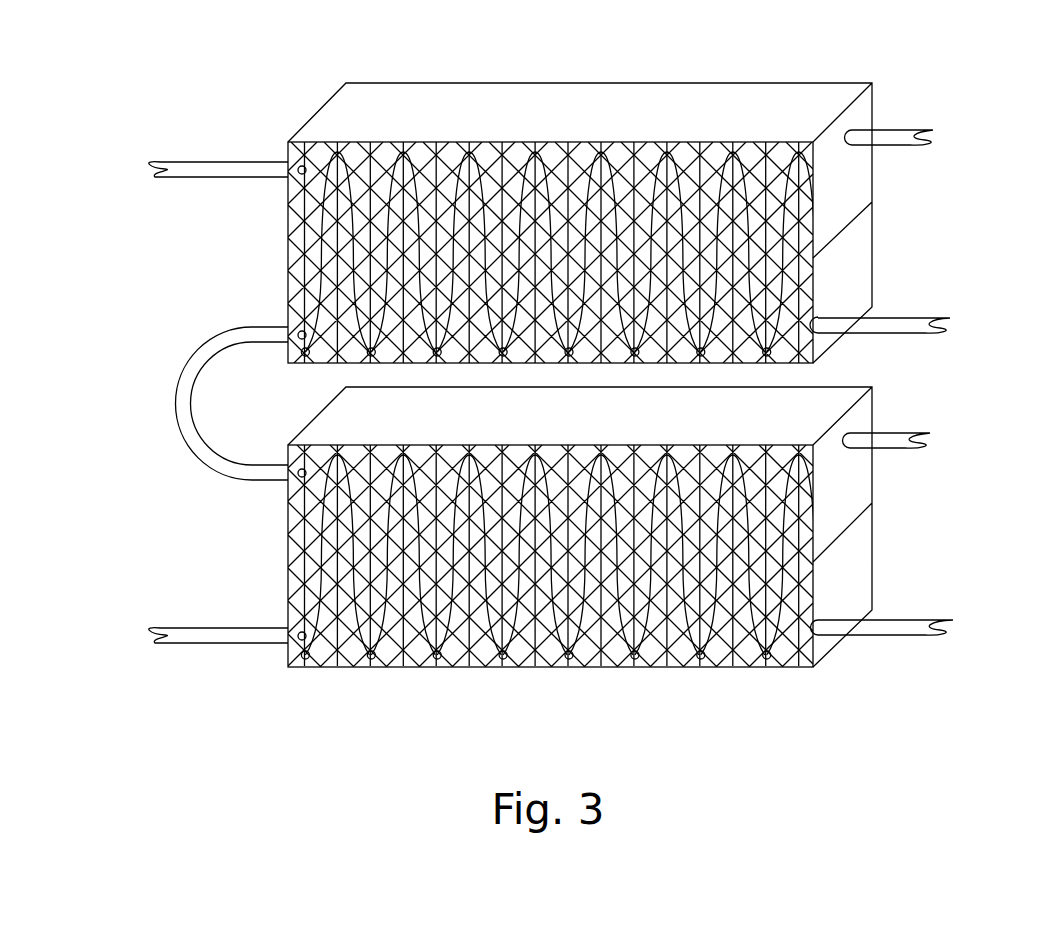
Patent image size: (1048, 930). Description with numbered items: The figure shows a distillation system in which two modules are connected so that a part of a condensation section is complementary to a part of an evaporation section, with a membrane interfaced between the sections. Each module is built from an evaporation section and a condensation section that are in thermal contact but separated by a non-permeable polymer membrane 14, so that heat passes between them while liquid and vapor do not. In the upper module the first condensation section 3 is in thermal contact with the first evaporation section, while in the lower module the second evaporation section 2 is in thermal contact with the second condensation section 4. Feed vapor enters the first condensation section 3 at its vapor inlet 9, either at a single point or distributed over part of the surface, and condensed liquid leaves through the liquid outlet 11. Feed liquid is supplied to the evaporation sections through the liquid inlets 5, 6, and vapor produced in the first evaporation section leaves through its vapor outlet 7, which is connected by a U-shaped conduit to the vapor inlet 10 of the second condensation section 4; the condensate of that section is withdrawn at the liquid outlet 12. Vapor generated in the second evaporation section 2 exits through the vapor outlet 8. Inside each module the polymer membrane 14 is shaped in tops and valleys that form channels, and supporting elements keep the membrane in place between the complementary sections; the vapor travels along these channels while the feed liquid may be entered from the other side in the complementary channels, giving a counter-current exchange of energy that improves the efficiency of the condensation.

The second evaporation section 2 is at (508, 155).
The first condensation section 3 is at (342, 640).
The second condensation section 4 is at (737, 347).
The liquid inlet of first evaporation section 5 is at (867, 440).
The liquid inlet of second evaporation section 6 is at (872, 135).
The vapor outlet of first evaporation section 7 is at (277, 473).
The vapor outlet of second evaporation section 8 is at (215, 168).
The vapor inlet of first condensation section 9 is at (270, 634).
The vapor inlet of second condensation section 10 is at (273, 330).
The liquid outlet of first condensation section 11 is at (848, 625).
The liquid outlet of second condensation section 12 is at (853, 325).
The non-permeable polymer membrane 14 is at (608, 177).